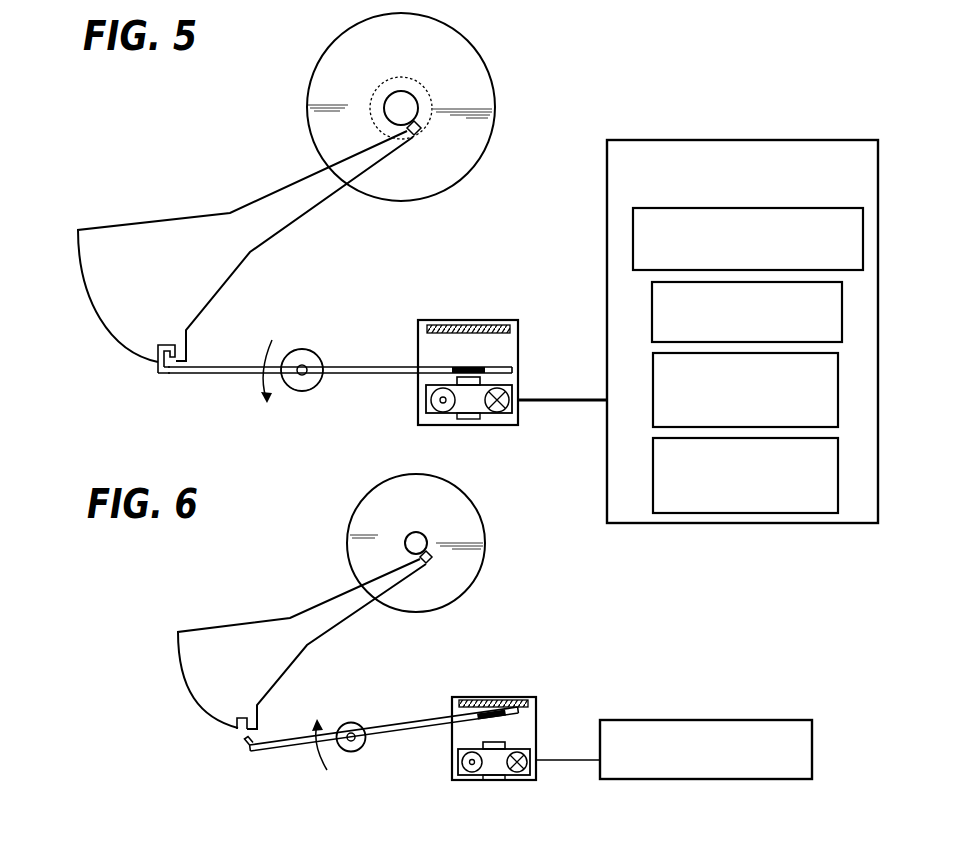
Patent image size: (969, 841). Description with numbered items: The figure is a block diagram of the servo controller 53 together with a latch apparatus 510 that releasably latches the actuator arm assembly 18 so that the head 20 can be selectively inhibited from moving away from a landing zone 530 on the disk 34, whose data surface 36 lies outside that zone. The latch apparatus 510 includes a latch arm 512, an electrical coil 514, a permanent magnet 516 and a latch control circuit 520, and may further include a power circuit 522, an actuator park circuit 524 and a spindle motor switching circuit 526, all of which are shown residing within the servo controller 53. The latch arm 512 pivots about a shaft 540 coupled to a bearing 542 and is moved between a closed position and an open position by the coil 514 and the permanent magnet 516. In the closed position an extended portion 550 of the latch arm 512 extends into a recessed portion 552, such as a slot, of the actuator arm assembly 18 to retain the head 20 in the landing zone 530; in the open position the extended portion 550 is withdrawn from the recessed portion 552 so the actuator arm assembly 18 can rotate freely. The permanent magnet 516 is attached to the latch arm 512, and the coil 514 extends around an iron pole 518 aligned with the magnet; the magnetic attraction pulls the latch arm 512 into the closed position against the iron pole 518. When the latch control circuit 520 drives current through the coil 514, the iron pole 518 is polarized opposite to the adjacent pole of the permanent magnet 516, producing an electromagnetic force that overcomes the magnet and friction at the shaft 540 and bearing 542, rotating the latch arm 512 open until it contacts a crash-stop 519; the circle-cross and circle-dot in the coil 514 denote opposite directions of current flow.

In FIG. 5, the disk 34 is at (492, 80).
In FIG. 6, the disk 34 is at (460, 490).
In FIG. 5, the disk data surface 36 is at (476, 138).
In FIG. 6, the disk data surface 36 is at (472, 530).
In FIG. 5, the landing zone 530 is at (405, 85).
In FIG. 5, the head 20 is at (419, 134).
In FIG. 6, the head 20 is at (431, 563).
In FIG. 5, the actuator arm assembly 18 is at (153, 220).
In FIG. 6, the actuator arm assembly 18 is at (238, 622).
In FIG. 5, the recessed portion 552 is at (167, 345).
In FIG. 6, the recessed portion 552 is at (245, 717).
In FIG. 5, the extended portion 550 is at (162, 373).
In FIG. 6, the extended portion 550 is at (243, 753).
In FIG. 5, the latch arm 512 is at (203, 367).
In FIG. 6, the latch arm 512 is at (270, 740).
In FIG. 5, the shaft 540 is at (309, 362).
In FIG. 6, the shaft 540 is at (357, 730).
In FIG. 5, the bearing 542 is at (317, 385).
In FIG. 6, the bearing 542 is at (360, 751).
In FIG. 5, the latch apparatus 510 is at (458, 300).
In FIG. 5, the crash-stop 519 is at (500, 325).
In FIG. 6, the crash-stop 519 is at (518, 698).
In FIG. 5, the permanent magnet 516 is at (467, 365).
In FIG. 6, the permanent magnet 516 is at (493, 720).
In FIG. 5, the iron pole 518 is at (482, 380).
In FIG. 6, the iron pole 518 is at (505, 746).
In FIG. 5, the electrical coil 514 is at (487, 414).
In FIG. 6, the electrical coil 514 is at (513, 776).
In FIG. 5, the servo controller 53 is at (738, 193).
In FIG. 6, the servo controller 53 is at (695, 768).
In FIG. 5, the latch control circuit 520 is at (734, 258).
In FIG. 5, the power circuit 522 is at (732, 330).
In FIG. 5, the actuator park circuit 524 is at (732, 418).
In FIG. 5, the spindle motor switching circuit 526 is at (732, 500).